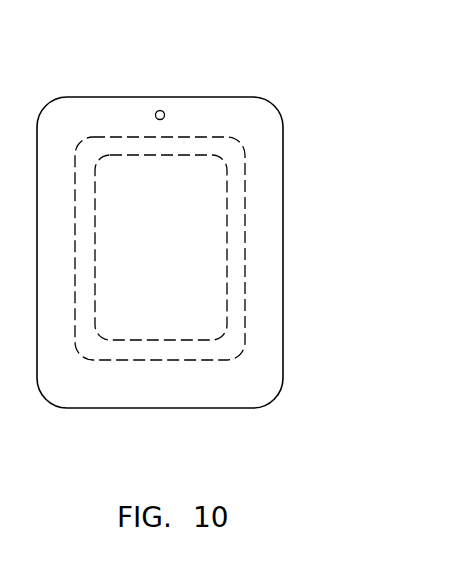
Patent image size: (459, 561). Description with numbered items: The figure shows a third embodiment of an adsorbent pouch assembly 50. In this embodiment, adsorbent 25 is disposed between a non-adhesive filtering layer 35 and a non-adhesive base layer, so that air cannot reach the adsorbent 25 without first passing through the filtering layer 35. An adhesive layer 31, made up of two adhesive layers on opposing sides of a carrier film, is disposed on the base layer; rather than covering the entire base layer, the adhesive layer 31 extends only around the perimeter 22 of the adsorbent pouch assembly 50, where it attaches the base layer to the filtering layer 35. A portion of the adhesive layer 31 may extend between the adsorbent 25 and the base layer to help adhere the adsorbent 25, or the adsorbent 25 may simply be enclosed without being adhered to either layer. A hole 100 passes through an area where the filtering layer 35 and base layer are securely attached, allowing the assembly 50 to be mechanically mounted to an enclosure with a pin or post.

The adsorbent pouch assembly 50 is at (191, 210).
The perimeter 22 is at (283, 375).
The filtering layer 35 is at (268, 198).
The adhesive layer 31 is at (245, 287).
The adsorbent 25 is at (226, 172).
The hole 100 is at (155, 114).